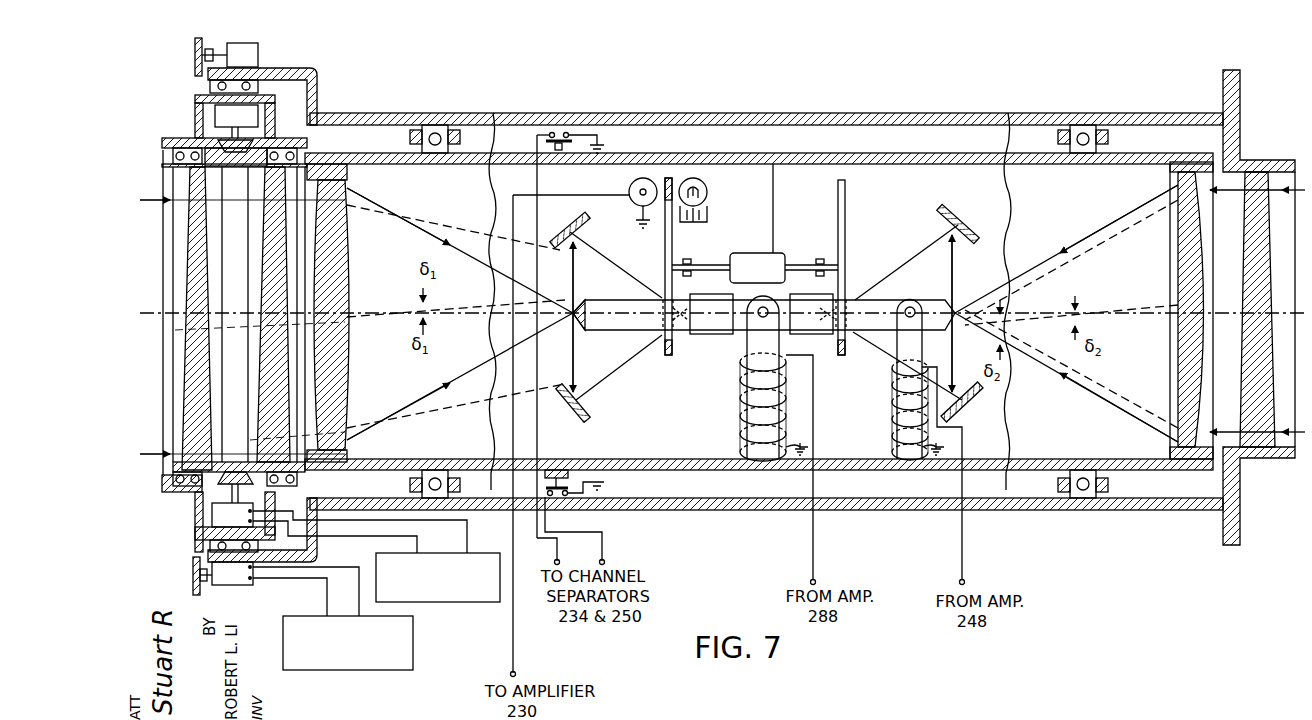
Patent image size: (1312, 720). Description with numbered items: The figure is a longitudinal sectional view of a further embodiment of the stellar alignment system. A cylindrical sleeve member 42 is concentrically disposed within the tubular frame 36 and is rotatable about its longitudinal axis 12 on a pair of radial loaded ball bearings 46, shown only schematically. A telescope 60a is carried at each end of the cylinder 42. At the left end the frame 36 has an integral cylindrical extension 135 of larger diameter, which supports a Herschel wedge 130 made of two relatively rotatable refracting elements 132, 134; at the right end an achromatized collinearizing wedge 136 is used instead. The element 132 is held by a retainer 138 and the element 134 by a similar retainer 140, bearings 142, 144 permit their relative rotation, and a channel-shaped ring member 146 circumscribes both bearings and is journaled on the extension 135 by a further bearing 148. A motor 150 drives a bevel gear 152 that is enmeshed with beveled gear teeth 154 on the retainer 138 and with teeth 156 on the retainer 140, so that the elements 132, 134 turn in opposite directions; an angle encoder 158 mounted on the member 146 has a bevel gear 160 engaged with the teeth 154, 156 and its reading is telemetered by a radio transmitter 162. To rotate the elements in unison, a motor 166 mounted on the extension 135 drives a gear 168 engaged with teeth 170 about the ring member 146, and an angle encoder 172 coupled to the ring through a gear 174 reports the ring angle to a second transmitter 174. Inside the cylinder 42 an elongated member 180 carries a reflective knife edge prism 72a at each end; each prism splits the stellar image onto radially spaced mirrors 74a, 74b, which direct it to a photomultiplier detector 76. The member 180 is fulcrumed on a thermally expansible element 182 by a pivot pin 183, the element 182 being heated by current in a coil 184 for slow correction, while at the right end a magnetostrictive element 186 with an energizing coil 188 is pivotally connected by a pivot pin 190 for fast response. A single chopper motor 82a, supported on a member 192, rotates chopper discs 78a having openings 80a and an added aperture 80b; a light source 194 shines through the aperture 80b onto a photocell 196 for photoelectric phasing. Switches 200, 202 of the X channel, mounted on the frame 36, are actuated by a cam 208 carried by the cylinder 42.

The longitudinal axis 12 is at (1095, 312).
The tubular frame 36 is at (350, 118).
The cylindrical or sleeve member 42 is at (826, 156).
The radial loaded ball bearings 46 is at (422, 140).
The telescope 60a is at (1178, 245).
The reflective knife edge prism 72a is at (578, 328).
The mirror 74a is at (566, 236).
The mirror 74b is at (578, 420).
The photosensor or detector 76 is at (702, 334).
The chopper disc 78a is at (673, 252).
The opening 80a is at (667, 348).
The aperture or opening 80b is at (670, 178).
The chopper motor 82a is at (778, 253).
The Herschel wedge 130 is at (240, 262).
The Herschel element 132 is at (185, 421).
The Herschel element 134 is at (328, 275).
The integral extension 135 is at (305, 70).
The collinearizing wedge 136 is at (1246, 252).
The retainer 138 is at (162, 486).
The retainer 140 is at (305, 488).
The bearing 142 is at (172, 156).
The bearing 144 is at (300, 152).
The ring or annular member 146 is at (314, 548).
The bearing 148 is at (210, 544).
The motor 150 is at (215, 116).
The bevel gear 152 is at (250, 146).
The beveled gear teeth 154 is at (236, 472).
The teeth 156 is at (275, 505).
The angle encoder 158 is at (212, 515).
The bevel gear 160 is at (278, 400).
The radio transmitter 162 is at (466, 602).
The motor 166 is at (258, 52).
The gear 168 is at (196, 55).
The teeth 170 is at (200, 86).
The angle encoder 172 is at (234, 585).
The gear 174 is at (194, 580).
The elongated member or support 180 is at (620, 330).
The thermally expansible element 182 is at (748, 366).
The pivot pin 183 is at (760, 318).
The coil 184 is at (745, 410).
The magnetostrictive element 186 is at (893, 432).
The energizing coil 188 is at (893, 393).
The pivot pin 190 is at (912, 300).
The member 192 is at (774, 205).
The source of light 194 is at (707, 190).
The photocell 196 is at (630, 188).
The switch 200 is at (570, 510).
The switch 202 is at (565, 132).
The cam 208 is at (575, 475).